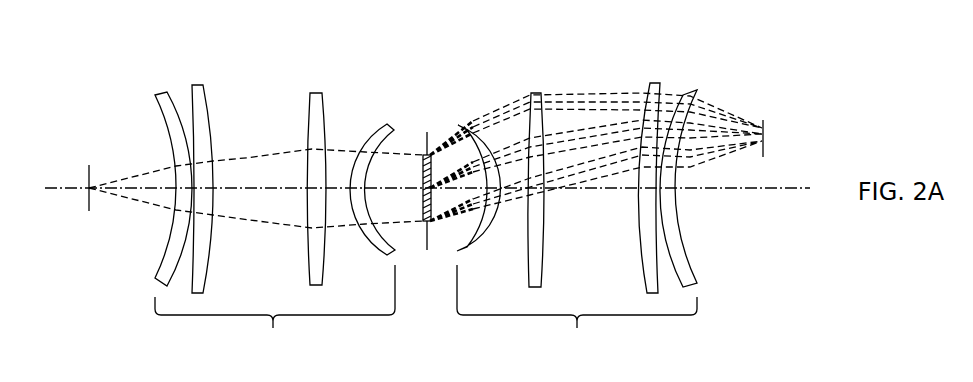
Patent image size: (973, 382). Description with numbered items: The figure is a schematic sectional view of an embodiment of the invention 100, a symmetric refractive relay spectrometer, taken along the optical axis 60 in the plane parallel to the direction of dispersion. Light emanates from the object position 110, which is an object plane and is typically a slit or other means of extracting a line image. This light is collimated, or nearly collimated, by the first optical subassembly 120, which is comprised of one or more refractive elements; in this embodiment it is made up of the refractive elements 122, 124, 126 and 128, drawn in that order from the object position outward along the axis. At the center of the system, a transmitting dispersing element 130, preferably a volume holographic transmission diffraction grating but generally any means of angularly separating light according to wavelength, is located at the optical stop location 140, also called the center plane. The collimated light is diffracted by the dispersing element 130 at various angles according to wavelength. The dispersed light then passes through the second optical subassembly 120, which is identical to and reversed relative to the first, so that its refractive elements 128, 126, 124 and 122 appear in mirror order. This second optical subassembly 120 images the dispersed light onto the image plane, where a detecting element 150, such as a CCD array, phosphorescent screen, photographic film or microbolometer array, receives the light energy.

The embodiment of the invention 100 is at (114, 64).
The optical axis 60 is at (58, 188).
The object position 110 is at (88, 165).
The optical subassembly 120 is at (426, 309).
The refractive element 122 is at (159, 92).
The refractive element 124 is at (198, 85).
The refractive element 126 is at (316, 93).
The refractive element 128 is at (390, 124).
The dispersing element 130 is at (423, 219).
The optical stop location 140 is at (426, 132).
The detecting element 150 is at (764, 120).